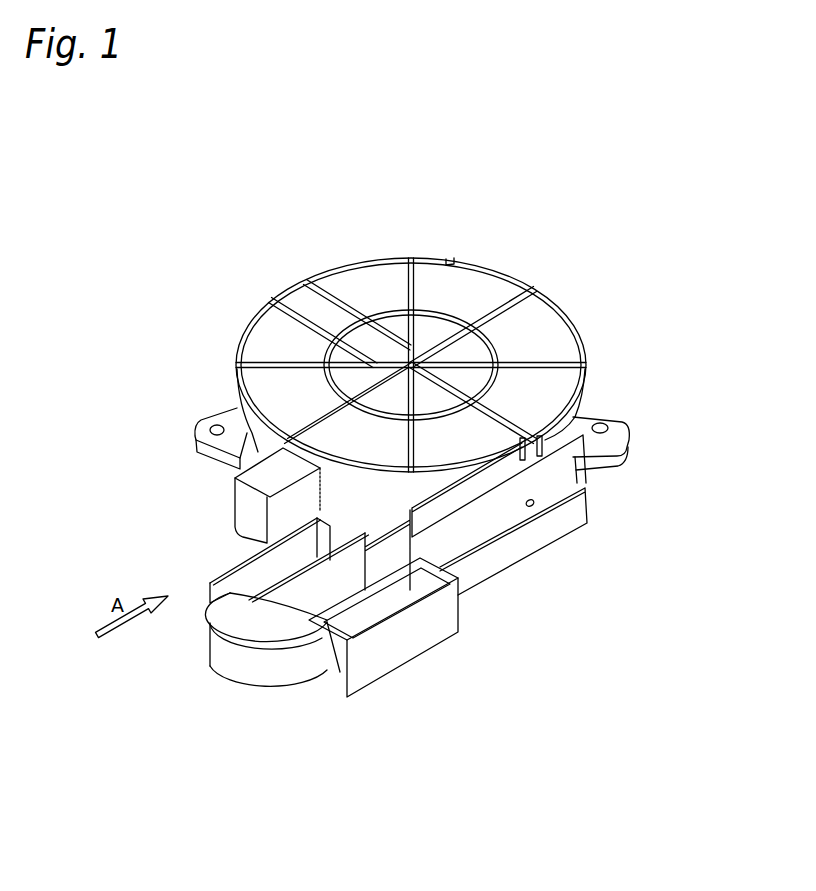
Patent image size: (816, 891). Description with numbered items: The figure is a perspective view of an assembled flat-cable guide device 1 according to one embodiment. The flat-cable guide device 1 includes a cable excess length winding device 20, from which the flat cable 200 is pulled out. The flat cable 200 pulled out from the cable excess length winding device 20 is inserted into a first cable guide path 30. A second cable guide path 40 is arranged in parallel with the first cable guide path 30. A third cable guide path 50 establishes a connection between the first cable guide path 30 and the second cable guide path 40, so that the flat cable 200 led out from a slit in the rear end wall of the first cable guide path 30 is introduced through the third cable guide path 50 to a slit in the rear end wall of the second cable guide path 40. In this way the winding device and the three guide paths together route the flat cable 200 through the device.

The flat-cable guide device 1 is at (407, 472).
The cable excess length winding device 20 is at (369, 255).
The first cable guide path 30 is at (233, 568).
The second cable guide path 40 is at (422, 643).
The third cable guide path 50 is at (267, 643).
The flat cable 200 is at (543, 537).